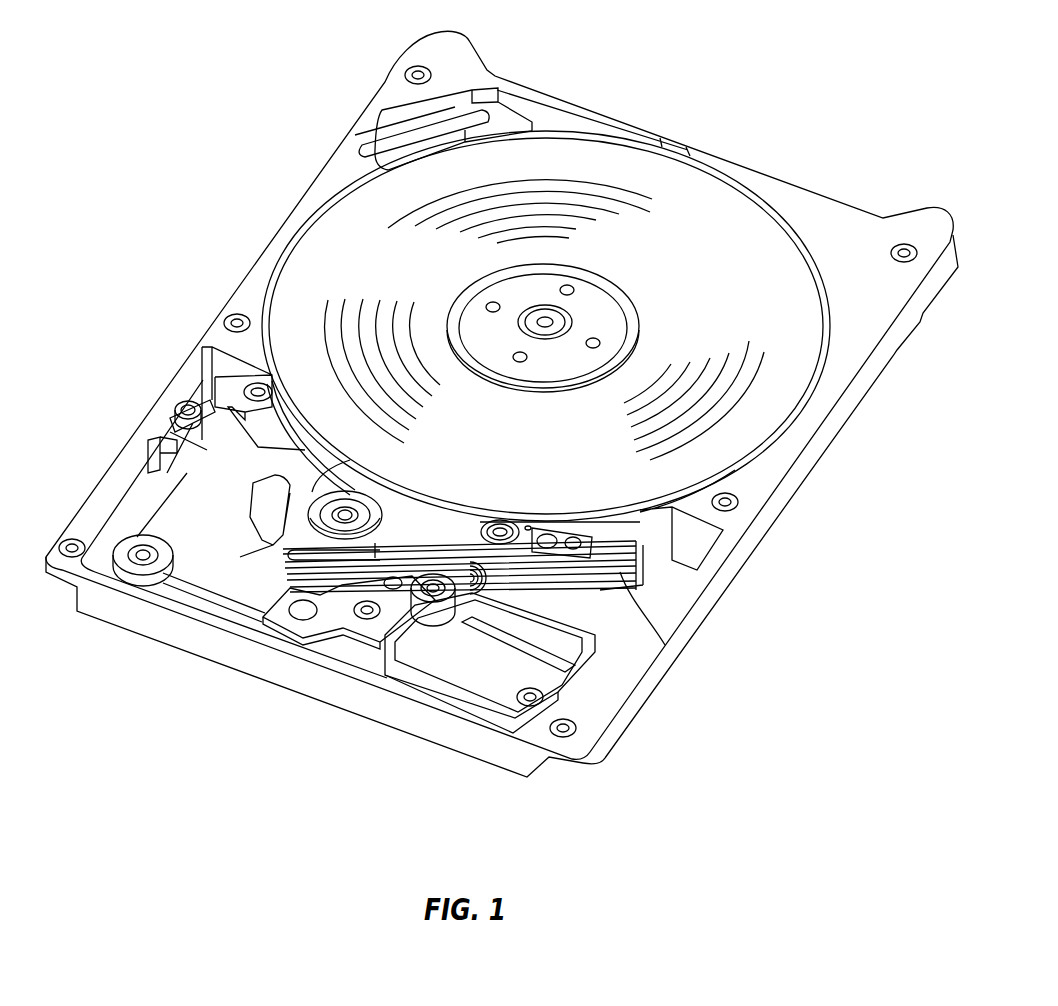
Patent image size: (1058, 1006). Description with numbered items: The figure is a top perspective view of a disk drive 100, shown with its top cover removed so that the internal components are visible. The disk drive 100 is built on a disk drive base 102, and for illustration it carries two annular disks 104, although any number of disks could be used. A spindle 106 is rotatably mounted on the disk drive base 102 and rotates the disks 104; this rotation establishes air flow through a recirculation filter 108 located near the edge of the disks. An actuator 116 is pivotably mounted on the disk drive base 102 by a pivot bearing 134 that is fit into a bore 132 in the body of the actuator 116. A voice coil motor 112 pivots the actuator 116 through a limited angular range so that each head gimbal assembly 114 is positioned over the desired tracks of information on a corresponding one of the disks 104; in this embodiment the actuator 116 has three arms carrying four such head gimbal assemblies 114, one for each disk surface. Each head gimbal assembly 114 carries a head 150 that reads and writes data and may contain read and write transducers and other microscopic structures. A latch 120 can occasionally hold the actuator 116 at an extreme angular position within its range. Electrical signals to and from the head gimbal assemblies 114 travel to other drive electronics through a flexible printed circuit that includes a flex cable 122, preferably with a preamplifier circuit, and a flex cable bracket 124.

The disk drive 100 is at (748, 92).
The disk drive base 102 is at (193, 645).
The annular disks 104 is at (318, 247).
The spindle 106 is at (603, 308).
The recirculation filter 108 is at (372, 149).
The voice coil motor 112 is at (167, 523).
The head gimbal assembly 114 is at (595, 560).
The actuator 116 is at (427, 520).
The latch 120 is at (167, 417).
The flex cable 122 is at (460, 557).
The flex cable bracket 124 is at (430, 645).
The bore 132 is at (332, 500).
The pivot bearing 134 is at (363, 510).
The head 150 is at (615, 577).